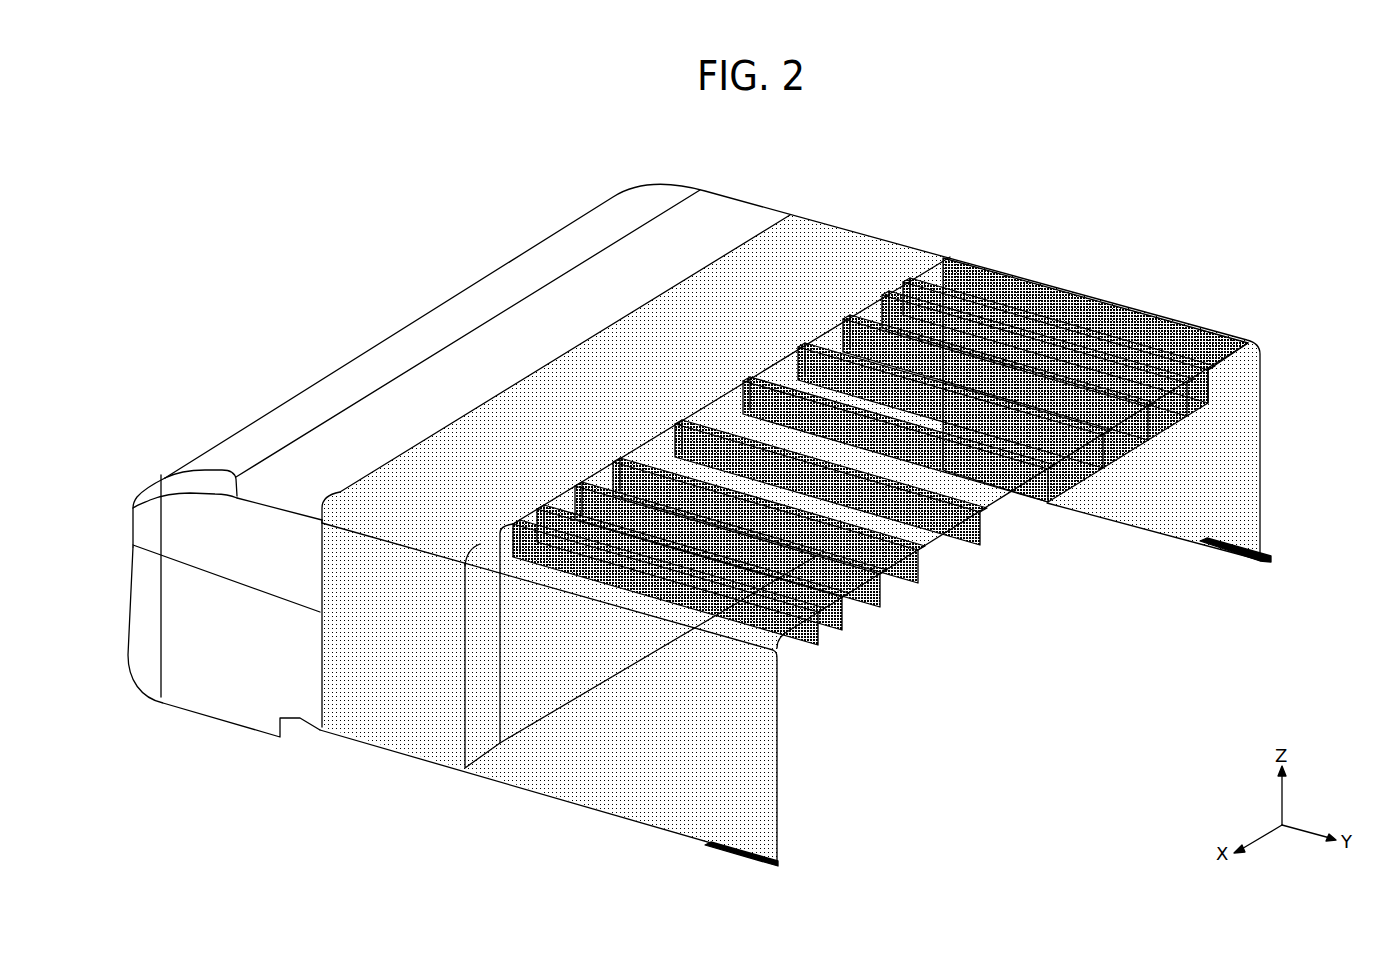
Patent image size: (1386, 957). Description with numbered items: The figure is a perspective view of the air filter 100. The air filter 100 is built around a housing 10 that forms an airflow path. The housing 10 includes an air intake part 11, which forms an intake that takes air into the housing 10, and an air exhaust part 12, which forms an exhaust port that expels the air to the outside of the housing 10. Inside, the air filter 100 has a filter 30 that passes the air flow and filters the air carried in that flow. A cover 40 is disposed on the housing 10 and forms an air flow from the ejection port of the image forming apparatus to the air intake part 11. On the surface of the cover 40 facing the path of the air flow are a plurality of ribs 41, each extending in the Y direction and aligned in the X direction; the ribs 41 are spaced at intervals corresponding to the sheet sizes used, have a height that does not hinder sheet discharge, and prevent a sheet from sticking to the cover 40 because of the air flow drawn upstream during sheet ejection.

The air filter 100 is at (1166, 153).
The housing 10 is at (435, 322).
The air intake part 11 is at (563, 710).
The air exhaust part 12 is at (201, 724).
The filter 30 is at (513, 660).
The cover 40 is at (1013, 278).
The ribs 41 is at (967, 530).